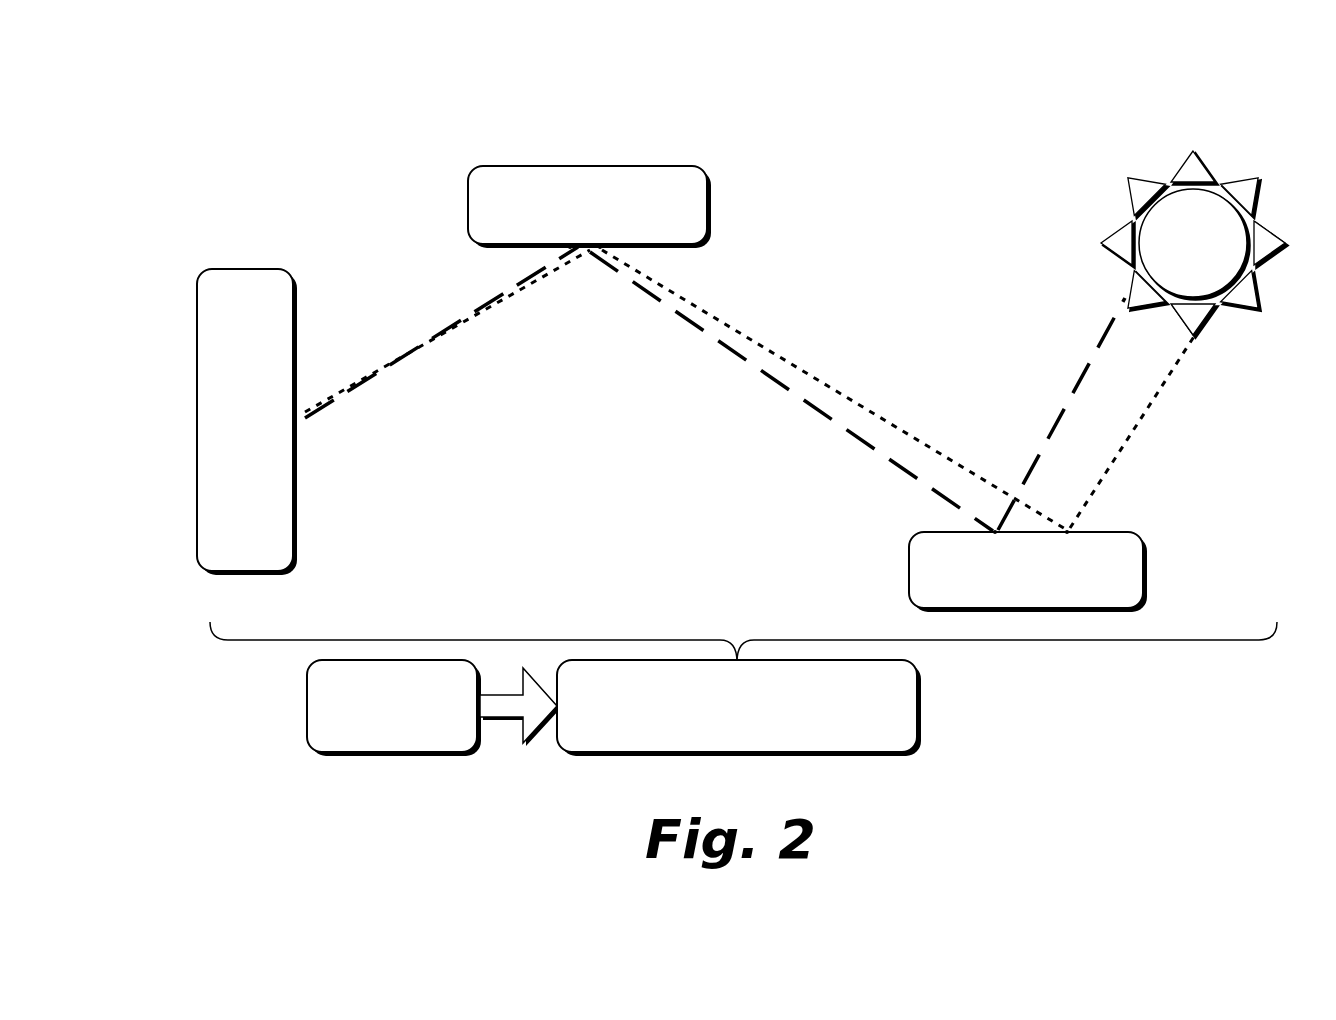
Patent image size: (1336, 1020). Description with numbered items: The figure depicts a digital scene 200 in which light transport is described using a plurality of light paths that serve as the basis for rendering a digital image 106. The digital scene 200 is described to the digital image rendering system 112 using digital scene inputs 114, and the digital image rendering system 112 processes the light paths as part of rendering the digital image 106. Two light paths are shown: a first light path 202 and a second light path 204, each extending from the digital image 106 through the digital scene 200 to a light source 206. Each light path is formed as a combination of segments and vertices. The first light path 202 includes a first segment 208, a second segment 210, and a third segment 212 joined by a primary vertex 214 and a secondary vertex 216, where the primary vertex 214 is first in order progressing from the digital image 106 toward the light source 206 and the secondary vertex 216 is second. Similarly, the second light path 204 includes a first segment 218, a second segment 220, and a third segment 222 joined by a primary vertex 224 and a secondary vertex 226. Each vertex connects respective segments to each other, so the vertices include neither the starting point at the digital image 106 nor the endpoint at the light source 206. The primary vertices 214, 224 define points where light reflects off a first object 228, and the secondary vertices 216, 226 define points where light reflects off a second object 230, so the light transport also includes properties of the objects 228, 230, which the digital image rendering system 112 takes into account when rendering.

The digital scene 200 is at (194, 150).
The digital image 106 is at (247, 422).
The digital image rendering system 112 is at (739, 708).
The digital scene inputs 114 is at (394, 708).
The first light path 202 is at (1122, 310).
The second light path 204 is at (1177, 311).
The light source 206 is at (1257, 146).
The first segment 208 is at (450, 322).
The second segment 210 is at (812, 412).
The third segment 212 is at (1097, 353).
The primary vertex 214 is at (568, 246).
The secondary vertex 216 is at (995, 530).
The first segment 218 is at (455, 331).
The second segment 220 is at (787, 352).
The third segment 222 is at (1147, 412).
The primary vertex 224 is at (599, 246).
The secondary vertex 226 is at (1067, 530).
The first object 228 is at (589, 207).
The second object 230 is at (1028, 572).